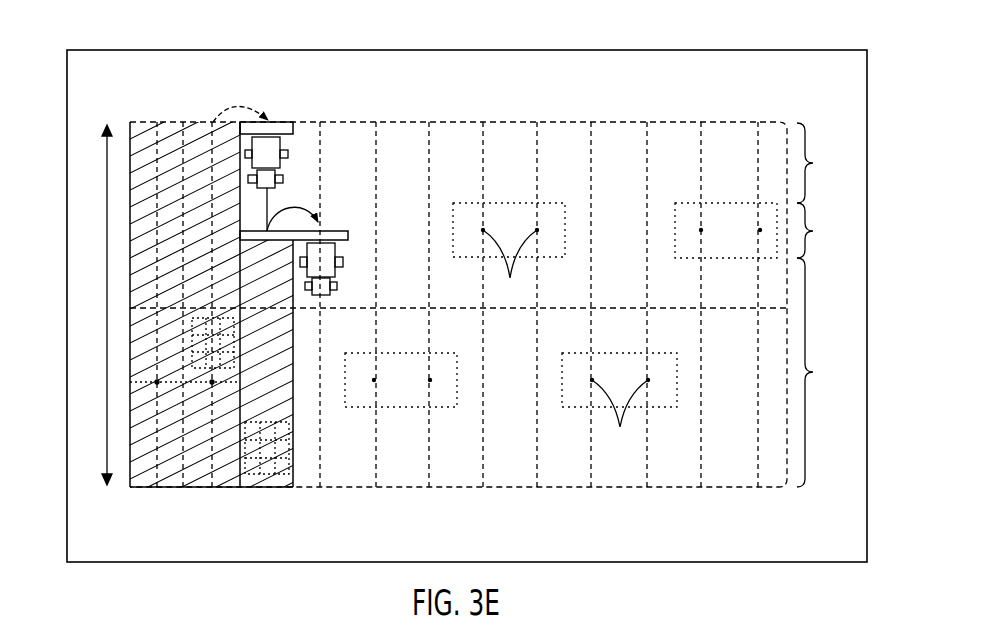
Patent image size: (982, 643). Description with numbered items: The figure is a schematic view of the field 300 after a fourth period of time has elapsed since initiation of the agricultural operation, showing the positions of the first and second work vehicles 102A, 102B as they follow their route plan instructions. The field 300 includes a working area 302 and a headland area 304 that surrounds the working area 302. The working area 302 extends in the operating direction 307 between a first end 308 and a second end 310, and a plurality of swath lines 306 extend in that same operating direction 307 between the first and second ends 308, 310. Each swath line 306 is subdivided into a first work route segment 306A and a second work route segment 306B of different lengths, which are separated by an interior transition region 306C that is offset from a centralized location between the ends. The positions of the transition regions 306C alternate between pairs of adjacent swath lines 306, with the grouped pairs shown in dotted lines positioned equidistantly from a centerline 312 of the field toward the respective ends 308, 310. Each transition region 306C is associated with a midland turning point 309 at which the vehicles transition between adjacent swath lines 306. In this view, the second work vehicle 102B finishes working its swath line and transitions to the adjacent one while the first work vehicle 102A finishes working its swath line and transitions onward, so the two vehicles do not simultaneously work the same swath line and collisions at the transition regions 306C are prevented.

The field 300 is at (777, 48).
The working area 302 is at (730, 122).
The headland area 304 is at (707, 68).
The swath lines 306 is at (647, 158).
The first work route segment 306A is at (213, 195).
The second work route segment 306B is at (322, 357).
The interior transition region 306C is at (222, 230).
The operating direction 307 is at (107, 249).
The first end 308 is at (109, 117).
The midland turning point 309 is at (267, 232).
The second end 310 is at (106, 494).
The centerline 312 is at (772, 308).
The first work vehicle 102A is at (268, 153).
The second work vehicle 102B is at (327, 268).